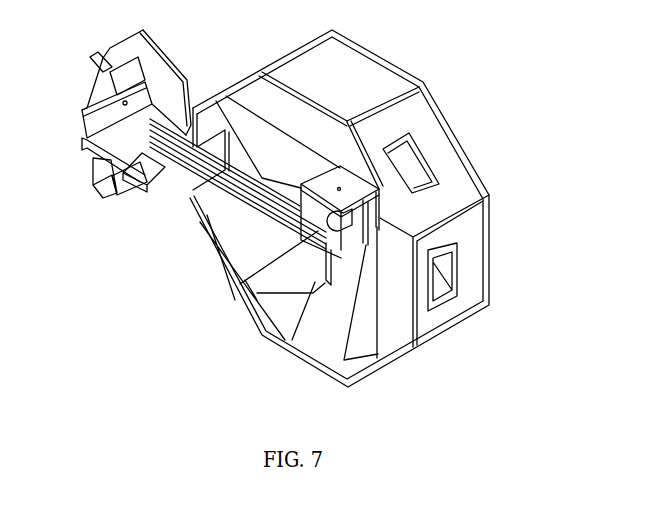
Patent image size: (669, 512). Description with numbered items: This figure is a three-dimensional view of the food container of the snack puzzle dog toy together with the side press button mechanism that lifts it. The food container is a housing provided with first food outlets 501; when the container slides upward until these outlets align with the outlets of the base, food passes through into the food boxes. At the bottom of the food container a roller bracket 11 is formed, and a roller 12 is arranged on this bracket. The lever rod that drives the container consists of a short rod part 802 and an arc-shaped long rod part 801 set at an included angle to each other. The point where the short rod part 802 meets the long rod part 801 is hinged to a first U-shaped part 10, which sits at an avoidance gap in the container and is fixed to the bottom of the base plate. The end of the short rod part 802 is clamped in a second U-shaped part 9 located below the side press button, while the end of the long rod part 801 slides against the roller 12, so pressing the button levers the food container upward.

The second U-shaped part 9 is at (115, 110).
The short rod part 802 is at (112, 188).
The first U-shaped part 10 is at (160, 185).
The long rod part 801 is at (222, 224).
The roller bracket 11 is at (340, 236).
The roller 12 is at (266, 325).
The first food outlet 501 is at (412, 172).